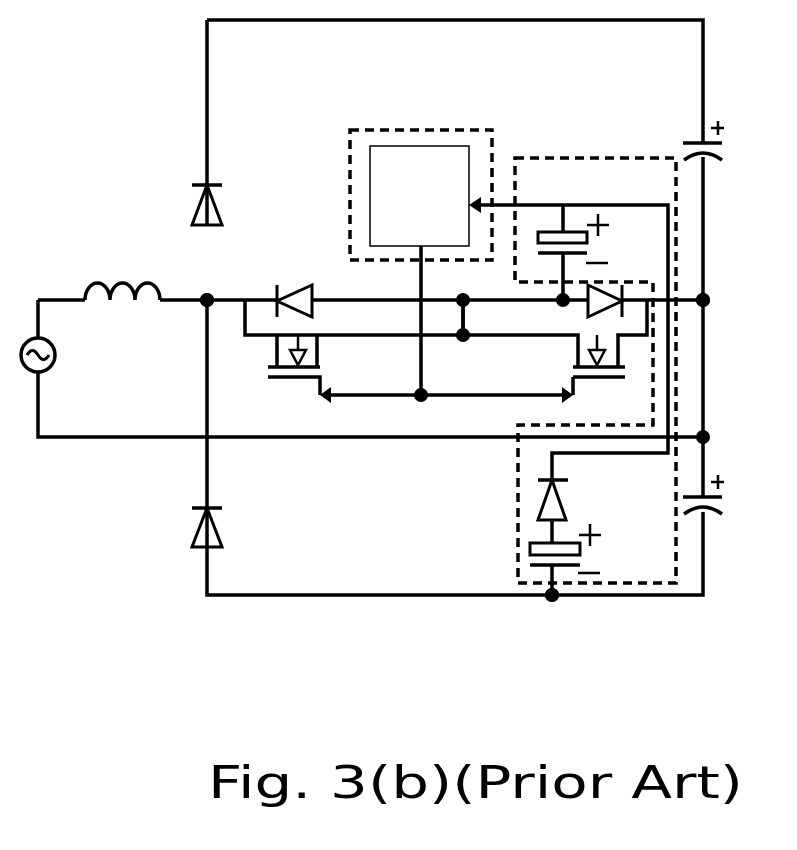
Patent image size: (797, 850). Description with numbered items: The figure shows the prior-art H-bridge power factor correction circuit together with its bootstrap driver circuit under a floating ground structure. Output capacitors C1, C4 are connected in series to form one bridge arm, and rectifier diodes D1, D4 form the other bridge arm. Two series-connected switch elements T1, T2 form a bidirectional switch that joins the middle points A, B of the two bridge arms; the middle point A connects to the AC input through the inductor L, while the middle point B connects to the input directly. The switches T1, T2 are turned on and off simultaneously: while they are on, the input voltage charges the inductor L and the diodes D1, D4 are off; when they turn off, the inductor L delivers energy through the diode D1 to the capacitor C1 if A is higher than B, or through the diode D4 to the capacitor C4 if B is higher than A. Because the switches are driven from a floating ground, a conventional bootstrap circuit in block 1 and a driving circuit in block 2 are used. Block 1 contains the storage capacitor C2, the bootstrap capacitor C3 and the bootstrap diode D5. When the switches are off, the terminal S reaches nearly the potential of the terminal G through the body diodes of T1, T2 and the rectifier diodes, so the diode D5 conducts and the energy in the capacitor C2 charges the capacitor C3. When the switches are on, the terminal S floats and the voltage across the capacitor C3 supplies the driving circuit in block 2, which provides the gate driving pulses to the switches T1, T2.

The bootstrap circuit block 1 is at (572, 158).
The driving circuit block 2 is at (427, 130).
The inductor L is at (122, 274).
The middle point A of bridge arm A is at (195, 284).
The middle point B of bridge arm B is at (715, 288).
The terminal S is at (450, 319).
The terminal G is at (558, 616).
The rectifier diode D1 is at (229, 184).
The rectifier diode D4 is at (229, 511).
The bootstrap diode D5 is at (595, 494).
The switch element T1 is at (298, 358).
The switch element T2 is at (597, 356).
The output capacitor C1 is at (727, 134).
The storage capacitor C2 is at (586, 554).
The bootstrap capacitor C3 is at (597, 238).
The output capacitor C4 is at (727, 488).